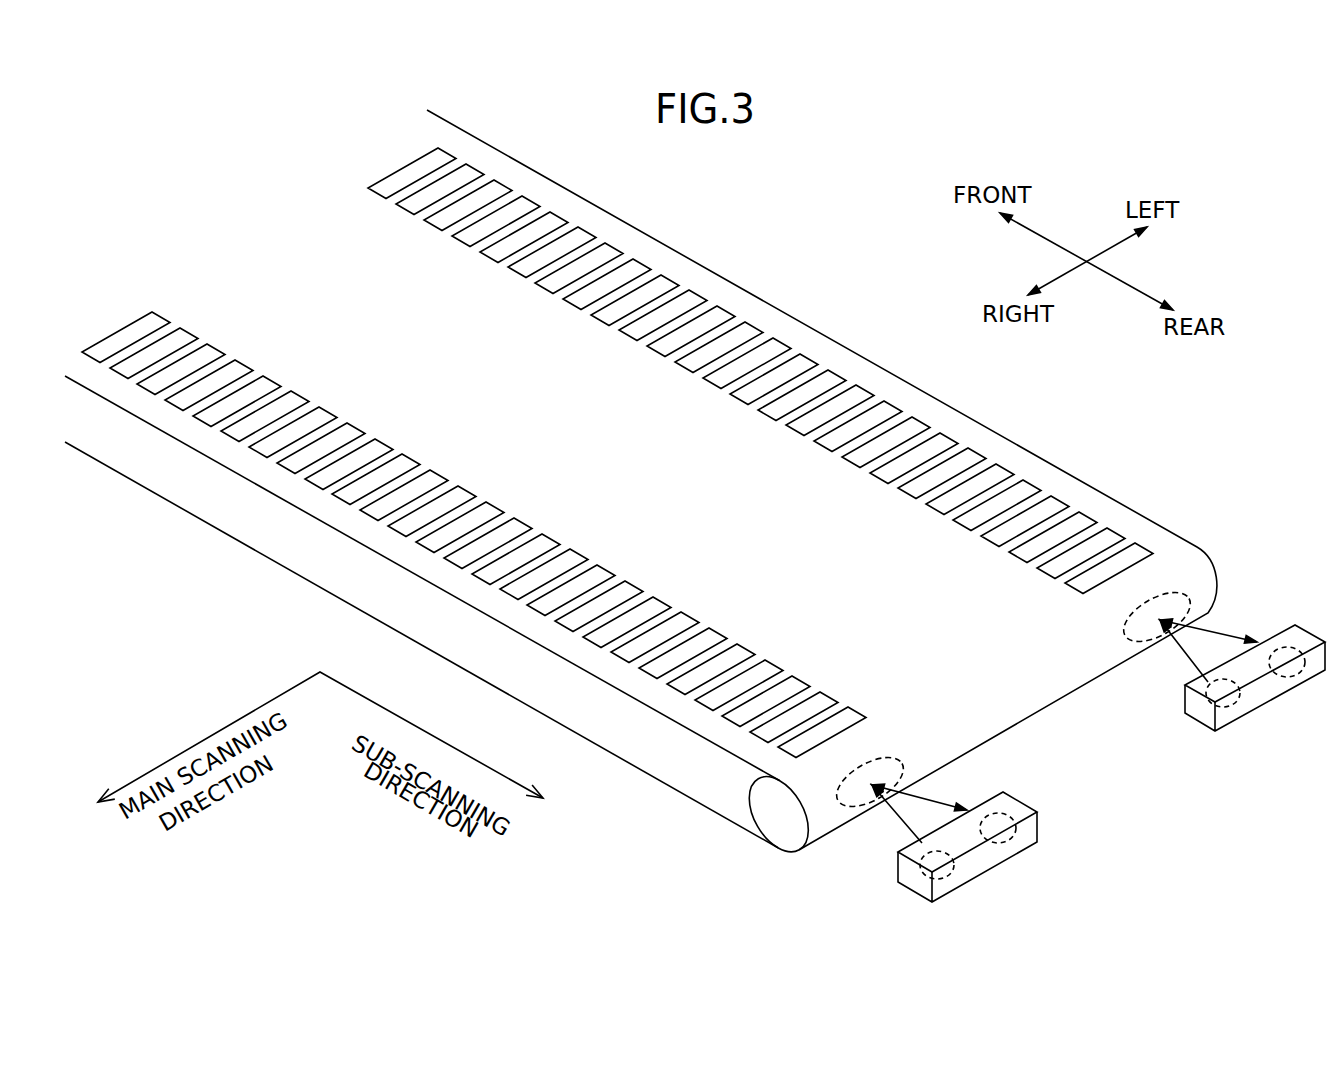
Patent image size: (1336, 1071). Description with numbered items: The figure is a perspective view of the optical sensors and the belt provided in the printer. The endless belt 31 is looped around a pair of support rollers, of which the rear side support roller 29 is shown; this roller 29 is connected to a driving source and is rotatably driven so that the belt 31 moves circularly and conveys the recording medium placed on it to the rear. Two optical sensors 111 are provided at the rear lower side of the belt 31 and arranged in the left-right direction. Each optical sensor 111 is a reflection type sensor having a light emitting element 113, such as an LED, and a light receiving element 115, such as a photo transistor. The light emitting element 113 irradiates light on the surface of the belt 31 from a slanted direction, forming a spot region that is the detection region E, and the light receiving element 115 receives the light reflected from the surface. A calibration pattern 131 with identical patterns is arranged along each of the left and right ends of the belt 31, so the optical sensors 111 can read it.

The rear side support roller 29 is at (787, 836).
The belt 31 is at (1137, 528).
The optical sensor 111 is at (1012, 807).
The light emitting element 113 is at (952, 882).
The light receiving element 115 is at (1014, 850).
The calibration pattern 131 is at (635, 355).
The detection region E is at (894, 758).